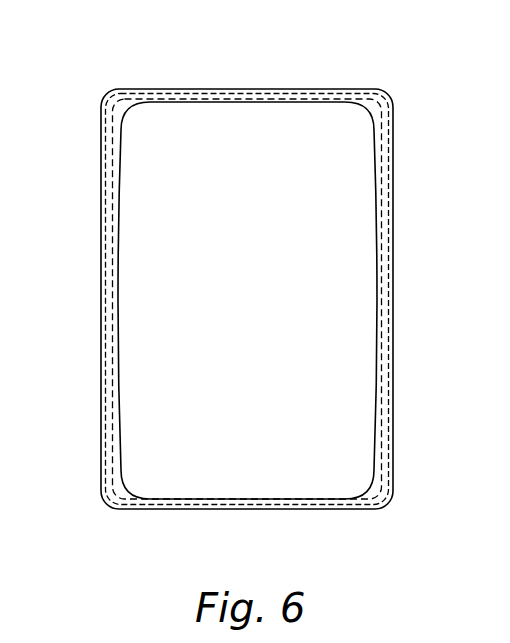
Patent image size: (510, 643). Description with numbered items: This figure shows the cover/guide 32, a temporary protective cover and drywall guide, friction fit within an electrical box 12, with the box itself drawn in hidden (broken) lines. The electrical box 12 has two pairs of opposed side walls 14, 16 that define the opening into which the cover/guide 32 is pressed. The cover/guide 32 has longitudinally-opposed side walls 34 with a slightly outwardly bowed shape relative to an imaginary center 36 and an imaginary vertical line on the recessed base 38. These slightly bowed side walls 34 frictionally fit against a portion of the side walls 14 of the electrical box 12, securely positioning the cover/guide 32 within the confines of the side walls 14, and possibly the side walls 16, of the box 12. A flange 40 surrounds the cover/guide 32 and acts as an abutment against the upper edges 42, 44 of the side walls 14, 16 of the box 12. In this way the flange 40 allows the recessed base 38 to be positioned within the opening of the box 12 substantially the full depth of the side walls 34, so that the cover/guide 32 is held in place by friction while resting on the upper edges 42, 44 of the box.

The electrical box 12 is at (394, 151).
The side walls 14 is at (104, 199).
The side walls 16 is at (257, 92).
The cover/guide 32 is at (290, 52).
The side walls 34 is at (116, 300).
The imaginary center 36 is at (253, 287).
The recessed base 38 is at (233, 225).
The flange 40 is at (116, 104).
The upper edges 42 is at (108, 355).
The upper edges 44 is at (192, 92).